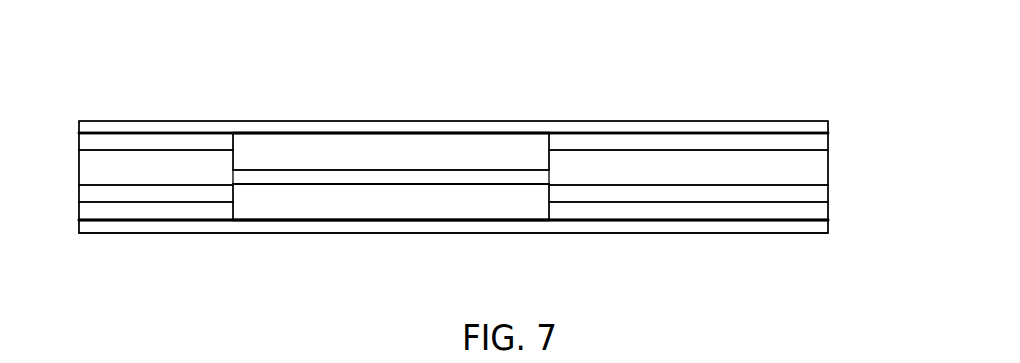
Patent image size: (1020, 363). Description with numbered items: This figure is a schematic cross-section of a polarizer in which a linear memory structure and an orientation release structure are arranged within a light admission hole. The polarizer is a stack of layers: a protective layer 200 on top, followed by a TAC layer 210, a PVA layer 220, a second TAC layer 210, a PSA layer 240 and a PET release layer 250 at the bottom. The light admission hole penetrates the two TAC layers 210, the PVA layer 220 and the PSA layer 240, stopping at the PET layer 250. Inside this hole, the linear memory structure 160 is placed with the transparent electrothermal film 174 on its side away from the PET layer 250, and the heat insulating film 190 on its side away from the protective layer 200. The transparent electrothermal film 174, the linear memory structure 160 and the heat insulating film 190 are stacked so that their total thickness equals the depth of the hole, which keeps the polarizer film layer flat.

The protective layer 200 is at (770, 122).
The TAC layer 210 is at (803, 143).
The PVA layer 220 is at (772, 168).
The PSA layer 240 is at (807, 213).
The PET layer 250 is at (717, 227).
The transparent electrothermal film 174 is at (515, 150).
The linear memory structure 160 is at (435, 180).
The heat insulating film 190 is at (312, 207).